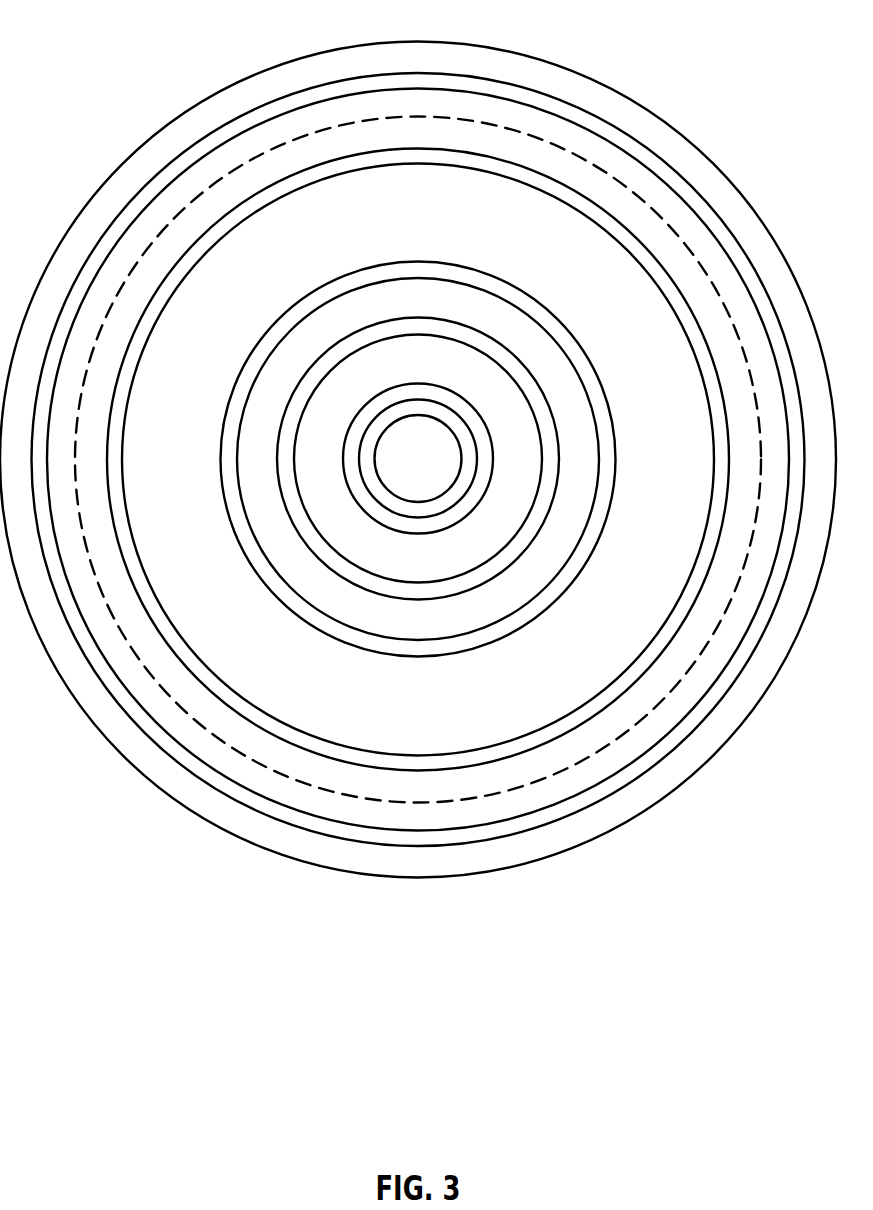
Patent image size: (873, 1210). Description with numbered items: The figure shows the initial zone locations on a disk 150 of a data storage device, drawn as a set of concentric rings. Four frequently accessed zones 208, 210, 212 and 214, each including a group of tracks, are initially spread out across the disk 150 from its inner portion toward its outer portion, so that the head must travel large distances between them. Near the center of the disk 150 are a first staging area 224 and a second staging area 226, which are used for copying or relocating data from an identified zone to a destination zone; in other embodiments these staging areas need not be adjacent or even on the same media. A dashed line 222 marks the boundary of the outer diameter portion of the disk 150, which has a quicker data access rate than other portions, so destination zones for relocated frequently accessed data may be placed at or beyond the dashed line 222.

The disk 150 is at (705, 159).
The zone 208 is at (438, 322).
The zone 210 is at (458, 267).
The zone 212 is at (372, 162).
The zone 214 is at (522, 95).
The dashed line 222 is at (761, 415).
The first staging area 224 is at (395, 386).
The second staging area 226 is at (465, 478).